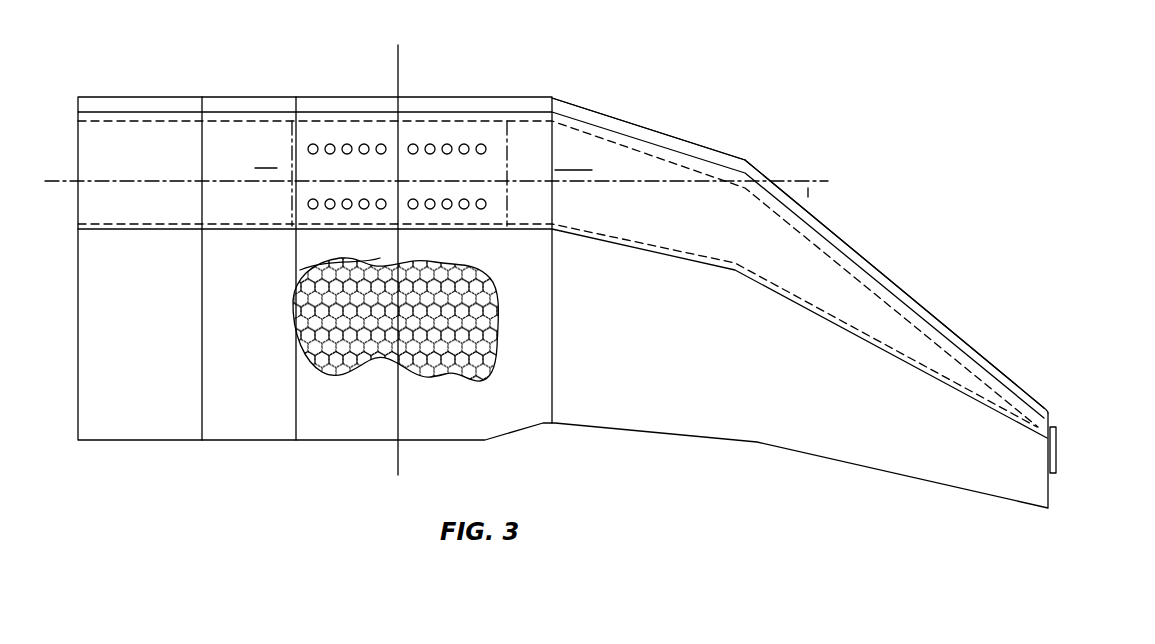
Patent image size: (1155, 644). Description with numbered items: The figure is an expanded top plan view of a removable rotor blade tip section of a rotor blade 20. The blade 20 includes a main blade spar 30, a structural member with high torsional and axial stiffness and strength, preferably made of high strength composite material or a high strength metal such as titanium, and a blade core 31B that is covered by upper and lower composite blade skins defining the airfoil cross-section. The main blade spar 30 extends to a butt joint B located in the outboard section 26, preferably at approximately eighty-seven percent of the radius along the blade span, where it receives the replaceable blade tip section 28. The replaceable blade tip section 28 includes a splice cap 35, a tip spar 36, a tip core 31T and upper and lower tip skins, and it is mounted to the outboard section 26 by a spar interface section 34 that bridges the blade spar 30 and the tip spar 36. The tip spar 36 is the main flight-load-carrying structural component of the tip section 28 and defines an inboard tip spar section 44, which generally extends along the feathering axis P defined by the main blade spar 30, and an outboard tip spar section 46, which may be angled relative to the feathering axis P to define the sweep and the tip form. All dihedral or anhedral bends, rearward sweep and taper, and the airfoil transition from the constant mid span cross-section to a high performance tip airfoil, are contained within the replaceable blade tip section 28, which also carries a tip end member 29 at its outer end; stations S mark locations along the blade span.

The blade 20 is at (233, 457).
The outboard section 26 is at (325, 88).
The replaceable blade tip section 28 is at (893, 227).
The tip member 29 is at (1057, 445).
The main blade spar 30 is at (160, 151).
The blade core 31B is at (372, 371).
The tip core 31T is at (445, 381).
The spar interface section 34 is at (540, 227).
The splice cap 35 is at (657, 131).
The tip spar 36 is at (698, 178).
The inboard tip spar section 44 is at (480, 122).
The outboard tip spar section 46 is at (608, 153).
The butt joint B is at (398, 97).
The stringer locations S is at (272, 168).
The feathering axis P is at (802, 183).